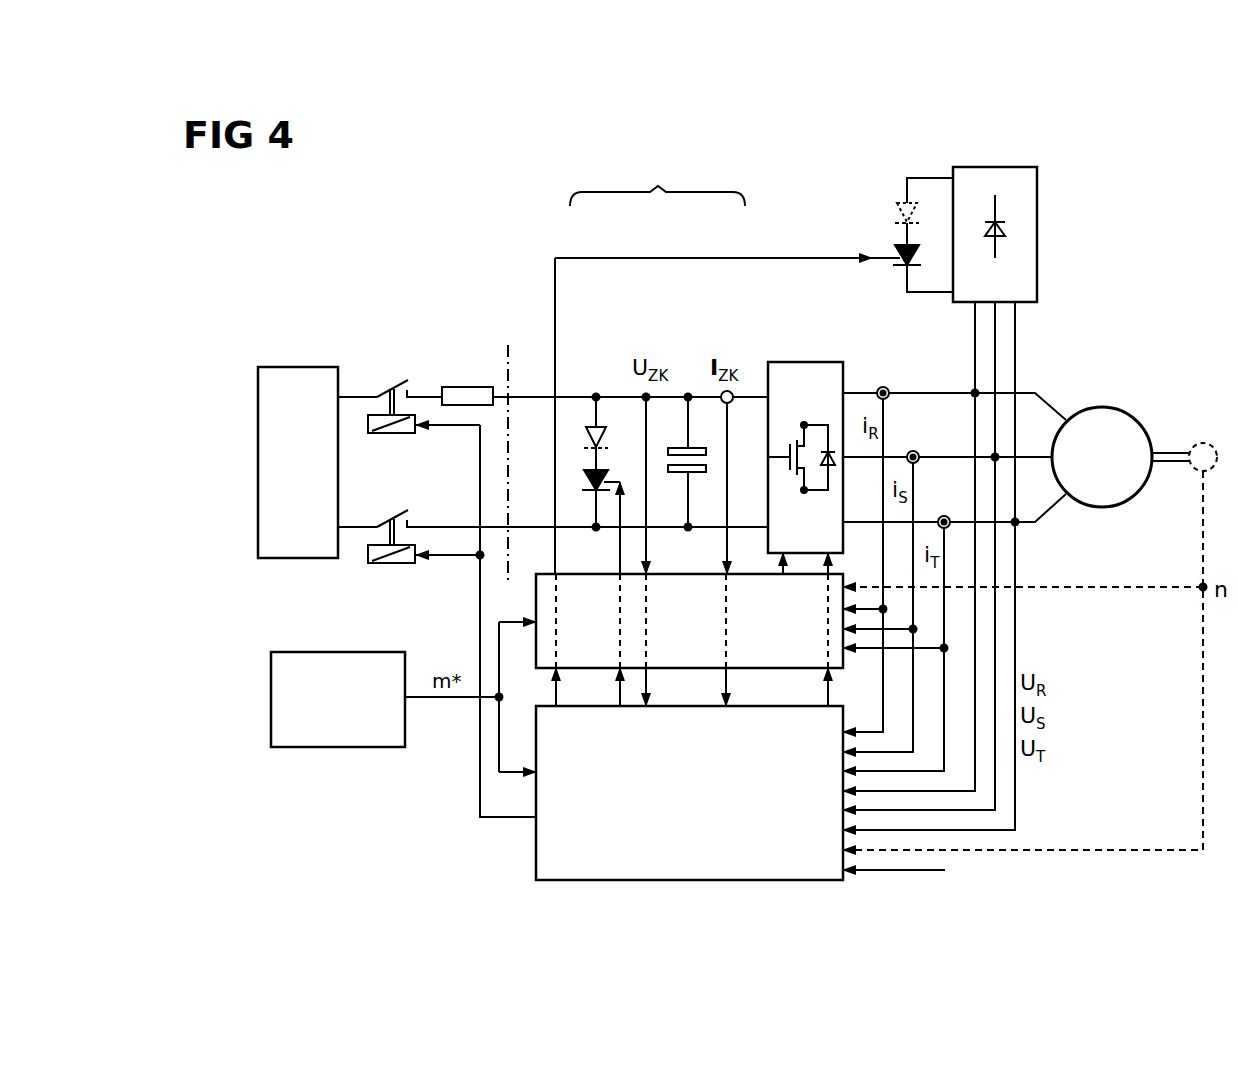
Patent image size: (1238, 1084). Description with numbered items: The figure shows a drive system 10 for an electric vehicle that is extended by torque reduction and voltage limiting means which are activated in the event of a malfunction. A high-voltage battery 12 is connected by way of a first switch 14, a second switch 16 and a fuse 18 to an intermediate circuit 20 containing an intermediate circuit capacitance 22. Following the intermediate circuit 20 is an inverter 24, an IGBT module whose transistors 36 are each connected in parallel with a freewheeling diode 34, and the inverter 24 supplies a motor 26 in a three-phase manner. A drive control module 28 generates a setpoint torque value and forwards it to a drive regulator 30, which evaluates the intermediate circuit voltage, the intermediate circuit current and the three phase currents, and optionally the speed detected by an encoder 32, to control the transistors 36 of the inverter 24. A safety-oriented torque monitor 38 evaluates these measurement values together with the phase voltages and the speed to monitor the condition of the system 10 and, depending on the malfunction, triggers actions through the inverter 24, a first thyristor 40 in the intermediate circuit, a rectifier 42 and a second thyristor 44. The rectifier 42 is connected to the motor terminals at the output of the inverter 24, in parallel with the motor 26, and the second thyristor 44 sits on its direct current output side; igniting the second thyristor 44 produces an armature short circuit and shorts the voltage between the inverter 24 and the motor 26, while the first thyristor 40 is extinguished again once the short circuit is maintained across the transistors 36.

The drive system 10 is at (1132, 178).
The battery 12 is at (258, 462).
The first switch 14 is at (412, 436).
The second switch 16 is at (412, 566).
The fuse 18 is at (455, 387).
The intermediate circuit 20 is at (658, 186).
The intermediate circuit capacitance 22 is at (692, 445).
The inverter 24 is at (805, 423).
The motor 26 is at (1105, 406).
The drive control module 28 is at (271, 697).
The drive regulator 30 is at (702, 641).
The encoder 32 is at (1203, 443).
The freewheeling diode 34 is at (820, 426).
The transistor 36 is at (794, 430).
The torque monitor 38 is at (536, 850).
The first thyristor 40 is at (604, 462).
The rectifier 42 is at (993, 167).
The second thyristor 44 is at (900, 272).